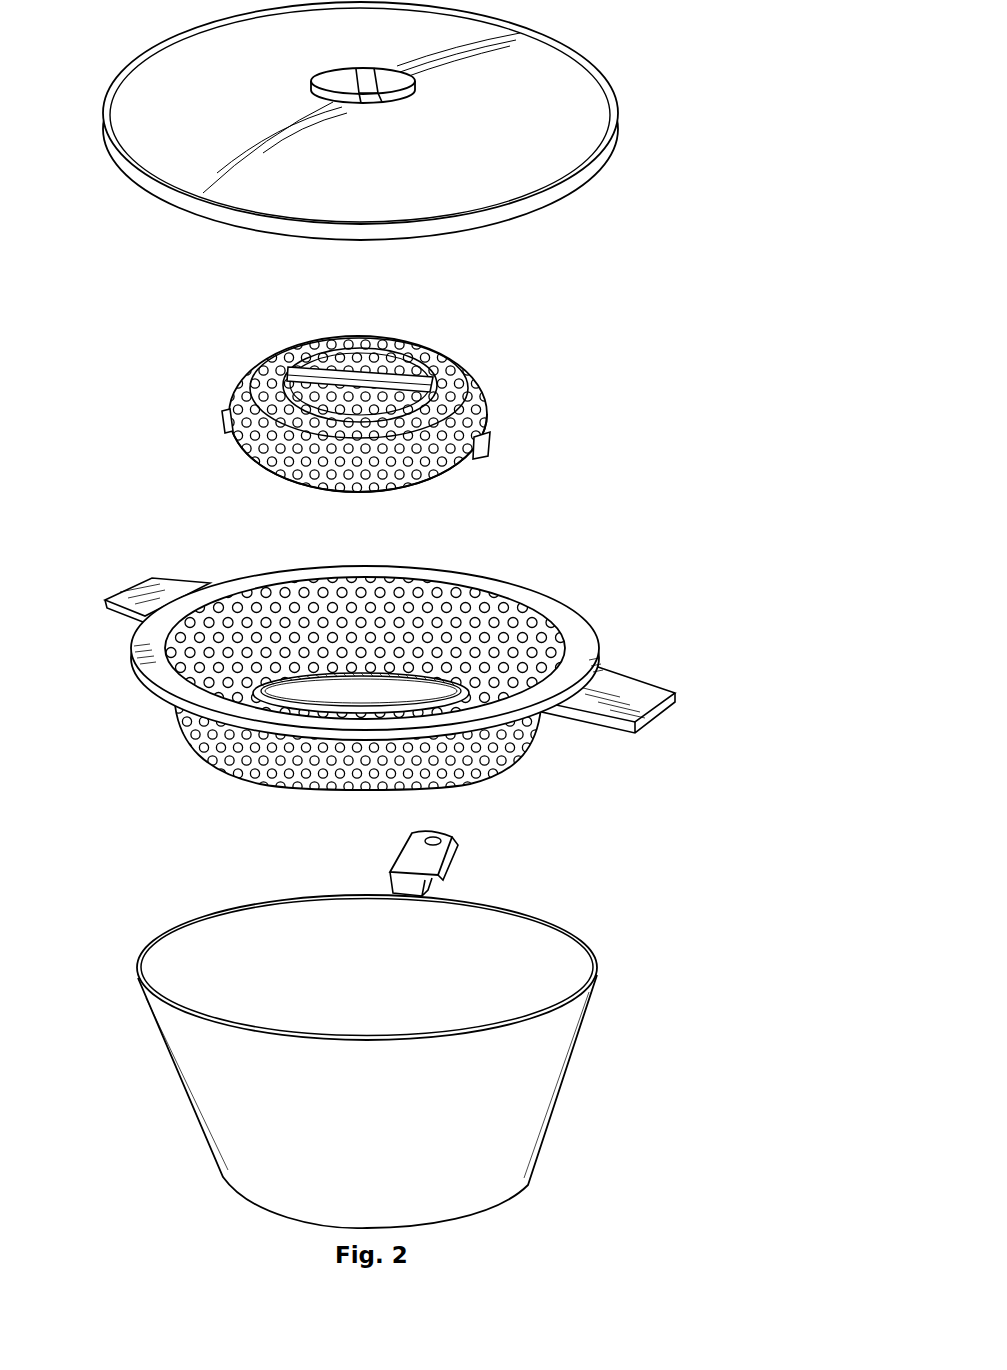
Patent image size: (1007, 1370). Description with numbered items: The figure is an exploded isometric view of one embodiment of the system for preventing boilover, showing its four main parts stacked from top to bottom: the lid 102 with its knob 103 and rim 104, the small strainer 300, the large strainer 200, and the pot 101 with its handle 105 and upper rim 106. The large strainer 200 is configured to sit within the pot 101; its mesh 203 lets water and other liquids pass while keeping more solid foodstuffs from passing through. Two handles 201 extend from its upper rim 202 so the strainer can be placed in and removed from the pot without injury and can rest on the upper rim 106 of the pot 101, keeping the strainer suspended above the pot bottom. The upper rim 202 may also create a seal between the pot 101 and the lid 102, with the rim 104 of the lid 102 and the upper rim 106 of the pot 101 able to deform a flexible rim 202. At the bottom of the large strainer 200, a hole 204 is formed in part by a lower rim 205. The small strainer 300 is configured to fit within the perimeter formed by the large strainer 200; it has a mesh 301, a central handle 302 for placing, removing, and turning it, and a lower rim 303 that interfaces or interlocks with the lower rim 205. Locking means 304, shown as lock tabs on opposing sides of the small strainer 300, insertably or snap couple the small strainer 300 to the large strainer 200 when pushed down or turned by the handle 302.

The pot 101 is at (510, 1115).
The lid 102 is at (568, 80).
The lid knob 103 is at (340, 77).
The rim of lid 104 is at (157, 187).
The pot handle 105 is at (407, 862).
The upper rim of pot 106 is at (572, 929).
The large strainer 200 is at (547, 600).
The handle 201 is at (132, 593).
The upper rim 202 is at (155, 665).
The mesh 203 is at (490, 760).
The hole 204 is at (293, 707).
The lower rim 205 is at (300, 700).
The small strainer 300 is at (386, 344).
The mesh 301 is at (464, 370).
The handle 302 is at (283, 357).
The lower rim 303 is at (237, 452).
The locking means 304 is at (223, 417).